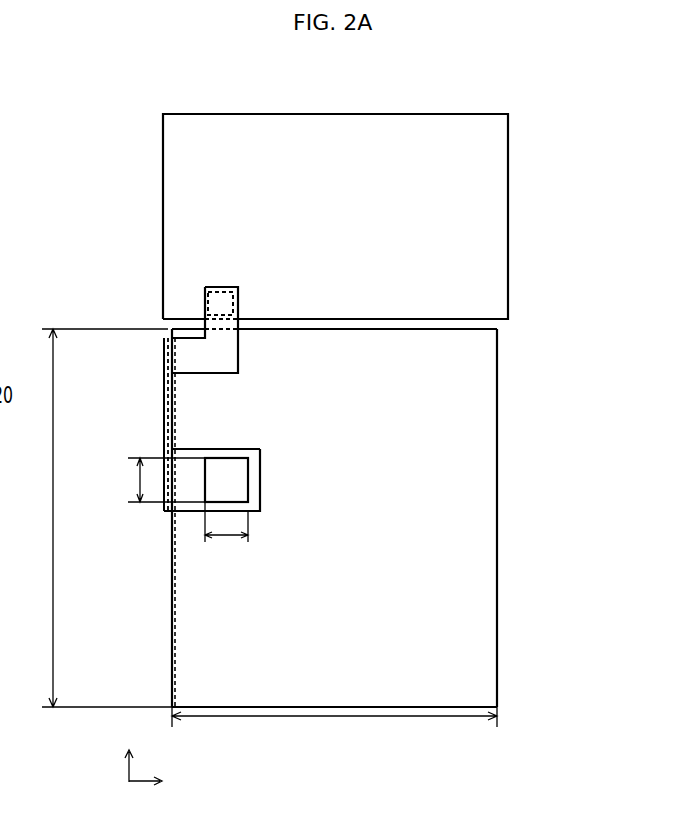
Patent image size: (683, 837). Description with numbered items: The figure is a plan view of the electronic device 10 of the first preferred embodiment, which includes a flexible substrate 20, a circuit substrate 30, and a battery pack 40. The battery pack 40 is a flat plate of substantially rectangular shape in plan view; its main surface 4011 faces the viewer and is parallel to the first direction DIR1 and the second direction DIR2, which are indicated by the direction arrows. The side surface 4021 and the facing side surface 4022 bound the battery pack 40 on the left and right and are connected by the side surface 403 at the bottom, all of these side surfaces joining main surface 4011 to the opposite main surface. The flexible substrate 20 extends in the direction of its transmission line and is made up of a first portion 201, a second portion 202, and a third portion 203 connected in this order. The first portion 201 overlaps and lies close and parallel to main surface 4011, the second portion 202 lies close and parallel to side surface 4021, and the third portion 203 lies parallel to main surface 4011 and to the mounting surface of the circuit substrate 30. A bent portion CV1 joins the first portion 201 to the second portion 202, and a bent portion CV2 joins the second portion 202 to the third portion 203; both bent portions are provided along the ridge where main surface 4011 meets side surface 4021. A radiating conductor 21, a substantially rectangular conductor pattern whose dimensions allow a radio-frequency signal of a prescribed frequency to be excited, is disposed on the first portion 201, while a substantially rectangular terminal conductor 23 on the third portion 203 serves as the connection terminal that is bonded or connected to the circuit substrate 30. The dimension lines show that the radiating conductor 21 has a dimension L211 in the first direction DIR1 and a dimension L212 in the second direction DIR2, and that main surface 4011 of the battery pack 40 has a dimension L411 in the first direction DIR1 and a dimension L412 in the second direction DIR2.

The electronic device 10 is at (499, 70).
The circuit substrate 30 is at (424, 122).
The battery pack 40 is at (336, 548).
The main surface 4011 is at (479, 412).
The side surface 4022 is at (502, 598).
The side surface 403 is at (456, 710).
The side surface 4021 is at (165, 641).
The flexible substrate 20 is at (159, 424).
The first portion 201 is at (190, 453).
The second portion 202 is at (165, 395).
The third portion 203 is at (187, 357).
The radiating conductor 21 is at (227, 492).
The terminal conductor 23 is at (210, 292).
The bent portion CV1 is at (165, 516).
The bent portion CV2 is at (166, 328).
The dimension L211 is at (226, 537).
The dimension L212 is at (154, 480).
The dimension L411 is at (334, 727).
The dimension L412 is at (98, 518).
The first direction DIR1 is at (171, 782).
The second direction DIR2 is at (129, 753).